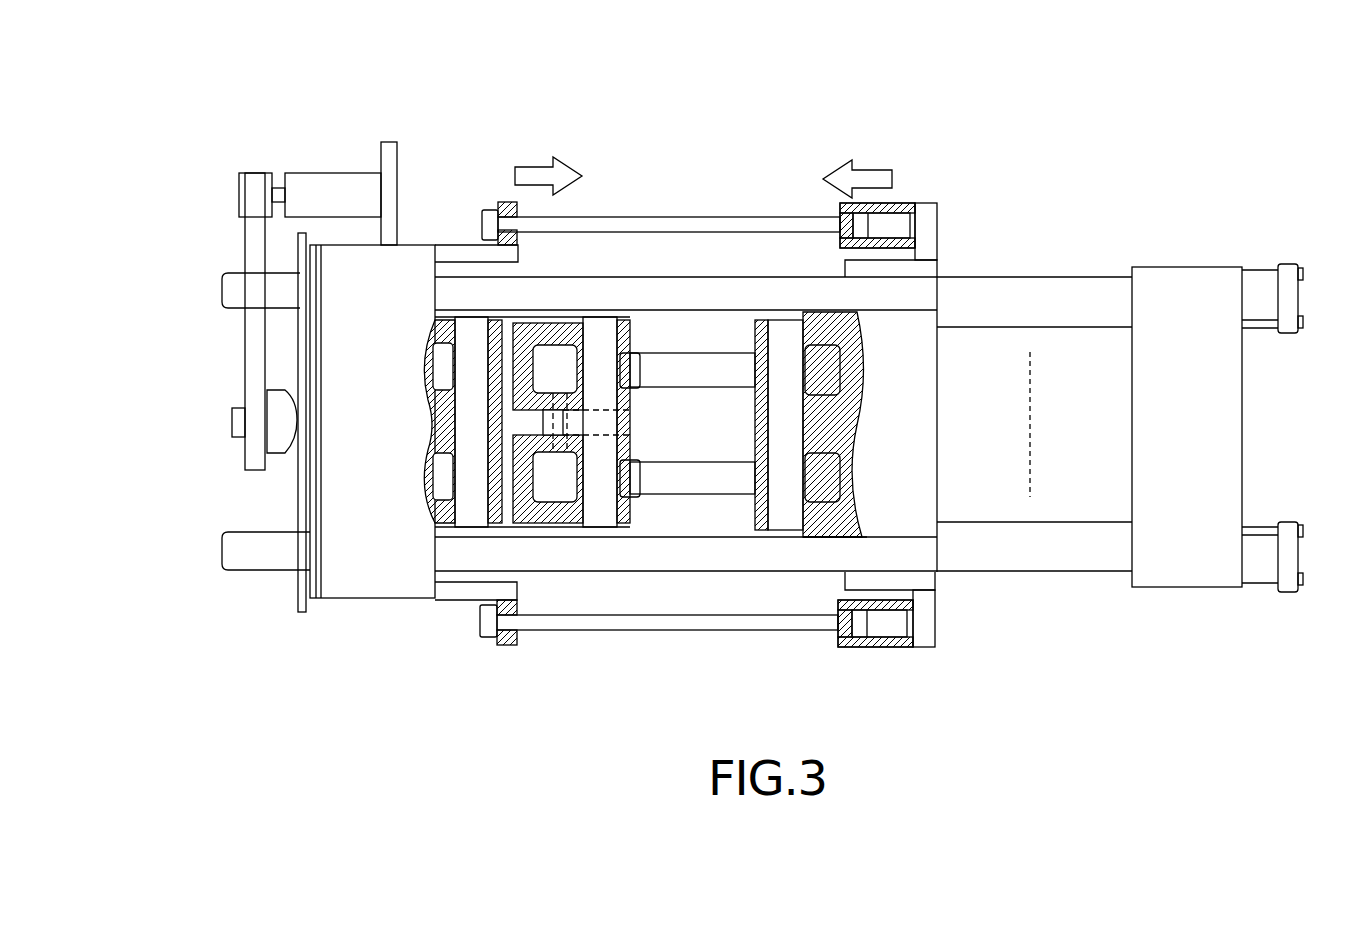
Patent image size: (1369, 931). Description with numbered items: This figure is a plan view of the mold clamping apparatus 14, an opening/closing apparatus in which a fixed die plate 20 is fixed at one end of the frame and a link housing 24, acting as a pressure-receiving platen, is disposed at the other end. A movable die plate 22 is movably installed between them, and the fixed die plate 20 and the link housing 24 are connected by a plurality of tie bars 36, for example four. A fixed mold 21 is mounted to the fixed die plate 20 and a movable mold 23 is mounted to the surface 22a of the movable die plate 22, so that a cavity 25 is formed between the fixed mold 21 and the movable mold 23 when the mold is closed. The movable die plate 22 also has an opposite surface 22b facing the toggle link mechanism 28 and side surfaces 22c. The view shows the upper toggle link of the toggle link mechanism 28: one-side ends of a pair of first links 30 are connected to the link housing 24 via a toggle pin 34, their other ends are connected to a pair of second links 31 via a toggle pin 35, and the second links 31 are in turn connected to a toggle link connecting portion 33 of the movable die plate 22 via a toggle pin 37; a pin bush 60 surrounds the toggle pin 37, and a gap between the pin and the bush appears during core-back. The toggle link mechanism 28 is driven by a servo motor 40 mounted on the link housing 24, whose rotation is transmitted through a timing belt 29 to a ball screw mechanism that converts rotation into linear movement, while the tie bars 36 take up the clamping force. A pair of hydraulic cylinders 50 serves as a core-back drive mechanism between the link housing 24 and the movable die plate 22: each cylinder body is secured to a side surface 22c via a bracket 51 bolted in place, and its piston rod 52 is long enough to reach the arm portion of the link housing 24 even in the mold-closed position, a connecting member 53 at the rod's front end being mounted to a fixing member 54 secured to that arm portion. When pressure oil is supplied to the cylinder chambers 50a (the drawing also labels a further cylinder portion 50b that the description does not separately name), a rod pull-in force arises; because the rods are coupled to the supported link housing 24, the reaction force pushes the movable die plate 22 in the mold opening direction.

The mold clamping apparatus 14 is at (908, 135).
The fixed die plate 20 is at (1215, 432).
The fixed mold 21 is at (1083, 510).
The movable die plate 22 is at (900, 443).
The mold mounting surface 22a is at (945, 390).
The opposite surface 22b is at (843, 268).
The side surfaces 22c is at (910, 262).
The movable mold 23 is at (1040, 362).
The link housing 24 is at (365, 573).
The cavity 25 is at (1035, 420).
The toggle link mechanism 28 is at (638, 323).
The timing belt 29 is at (255, 355).
The first links 30 is at (547, 330).
The second links 31 is at (700, 365).
The toggle link connecting portion 33 is at (812, 512).
The toggle pin 34 is at (470, 425).
The toggle pin 35 is at (600, 513).
The tie bars 36 is at (705, 295).
The toggle pin 37 is at (790, 410).
The servo motor 40 is at (330, 192).
The hydraulic cylinders 50 is at (894, 440).
The cylinder chambers 50a is at (845, 217).
The slider inner block 50b is at (895, 230).
The bracket 51 is at (937, 210).
The piston rods 52 is at (670, 222).
The connecting member 53 is at (487, 217).
The fixing member 54 is at (457, 250).
The pin bush 60 is at (440, 360).